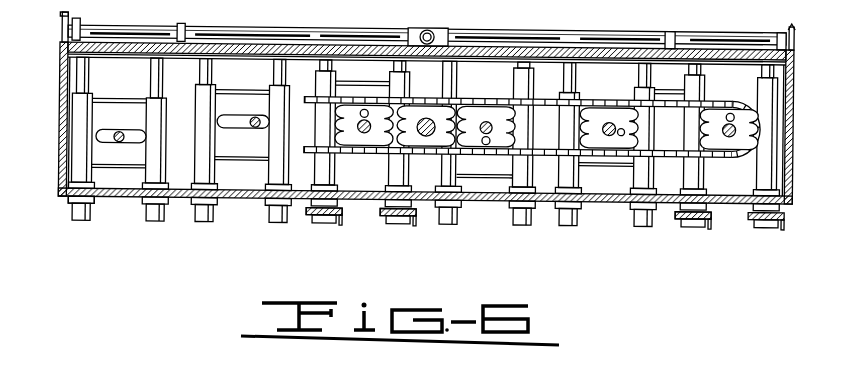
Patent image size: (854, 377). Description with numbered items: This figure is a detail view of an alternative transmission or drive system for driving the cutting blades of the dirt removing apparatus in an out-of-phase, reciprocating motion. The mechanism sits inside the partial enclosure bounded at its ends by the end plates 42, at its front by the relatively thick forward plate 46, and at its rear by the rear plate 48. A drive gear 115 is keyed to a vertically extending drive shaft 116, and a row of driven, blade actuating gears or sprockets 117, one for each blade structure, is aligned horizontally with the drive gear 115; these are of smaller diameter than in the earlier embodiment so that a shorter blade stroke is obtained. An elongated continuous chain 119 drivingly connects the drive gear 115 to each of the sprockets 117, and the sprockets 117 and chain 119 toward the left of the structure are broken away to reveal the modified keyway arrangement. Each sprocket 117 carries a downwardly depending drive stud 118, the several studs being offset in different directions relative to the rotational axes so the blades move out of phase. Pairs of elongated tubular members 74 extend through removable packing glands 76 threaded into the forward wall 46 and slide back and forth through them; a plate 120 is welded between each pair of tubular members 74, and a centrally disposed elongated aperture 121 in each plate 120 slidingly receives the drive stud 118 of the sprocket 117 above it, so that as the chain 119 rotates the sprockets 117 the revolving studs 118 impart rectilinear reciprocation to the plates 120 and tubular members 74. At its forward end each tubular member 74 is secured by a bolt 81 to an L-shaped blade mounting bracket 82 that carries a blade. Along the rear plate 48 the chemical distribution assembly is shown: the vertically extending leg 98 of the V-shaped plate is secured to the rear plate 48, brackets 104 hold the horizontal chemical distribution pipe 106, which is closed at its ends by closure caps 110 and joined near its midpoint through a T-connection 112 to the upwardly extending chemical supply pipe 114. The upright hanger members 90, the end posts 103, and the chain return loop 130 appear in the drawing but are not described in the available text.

The end plate 42 is at (62, 110).
The forward plate 46 is at (473, 197).
The rear plate 48 is at (231, 44).
The tubular member 74 is at (74, 134).
The packing gland 76 is at (94, 199).
The bolt 81 is at (403, 221).
The L-shaped blade mounting bracket 82 is at (345, 219).
The hanger rod 90 is at (86, 62).
The vertically extending leg 98 is at (258, 46).
The end post 103 is at (62, 16).
The bracket 104 is at (180, 23).
The chemical distribution pipe 106 is at (568, 28).
The closure cap 110 is at (77, 21).
The T-connection 112 is at (444, 26).
The chemical supply pipe 114 is at (421, 29).
The drive gear 115 is at (428, 134).
The drive shaft 116 is at (430, 104).
The driven blade actuating sprocket 117 is at (494, 104).
The drive stud 118 is at (100, 128).
The chain 119 is at (556, 150).
The plate 120 is at (113, 101).
The elongated aperture 121 is at (231, 127).
The chain return loop 130 is at (747, 86).